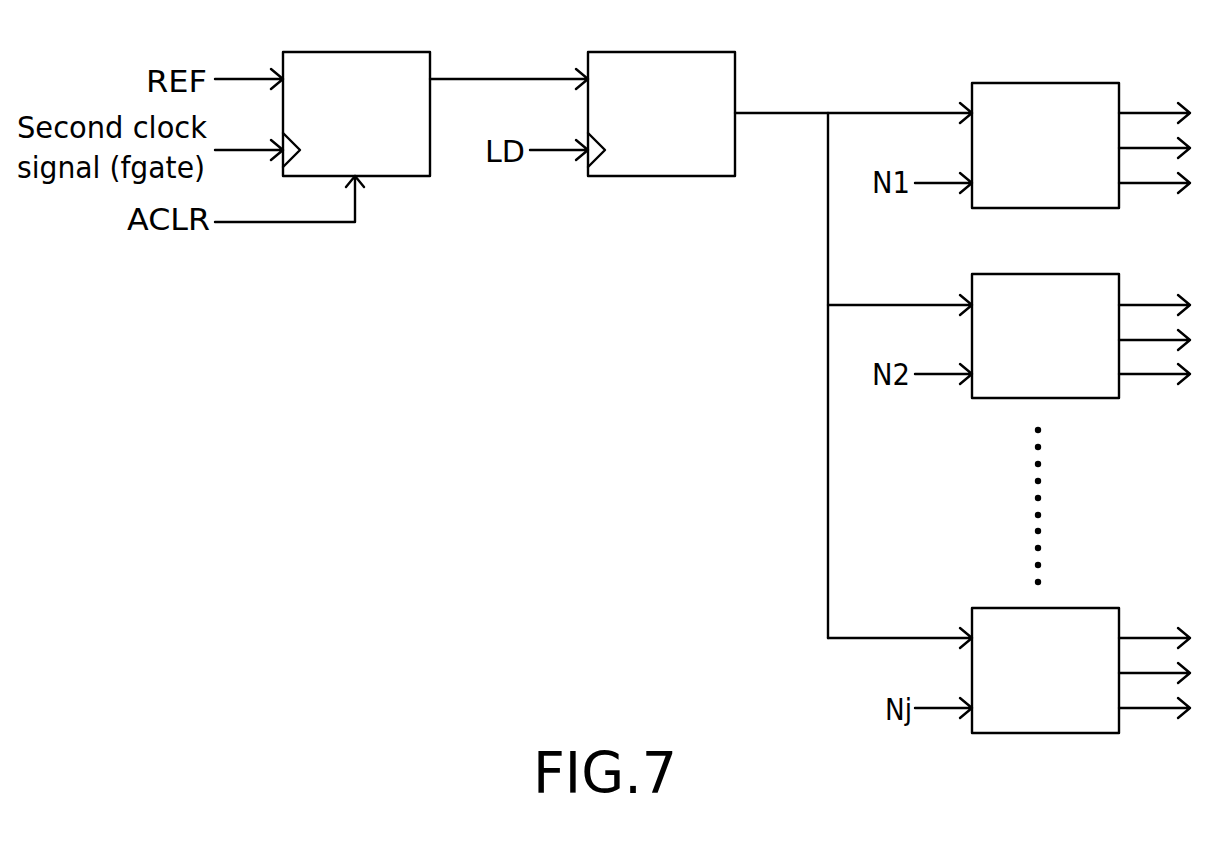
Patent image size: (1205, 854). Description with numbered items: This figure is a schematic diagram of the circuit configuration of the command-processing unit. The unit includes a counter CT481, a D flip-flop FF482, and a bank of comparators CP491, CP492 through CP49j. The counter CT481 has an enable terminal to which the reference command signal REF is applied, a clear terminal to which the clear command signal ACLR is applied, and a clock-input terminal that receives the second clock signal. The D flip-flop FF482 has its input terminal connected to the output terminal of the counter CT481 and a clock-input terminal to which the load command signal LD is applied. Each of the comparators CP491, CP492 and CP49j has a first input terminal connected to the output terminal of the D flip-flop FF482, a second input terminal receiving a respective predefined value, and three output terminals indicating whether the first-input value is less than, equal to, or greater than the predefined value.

The counter CT481 is at (353, 68).
The D Flip-Flop FF482 is at (658, 68).
The comparator CP491 is at (1043, 102).
The comparator CP492 is at (1043, 292).
The comparator CP49j is at (1043, 625).